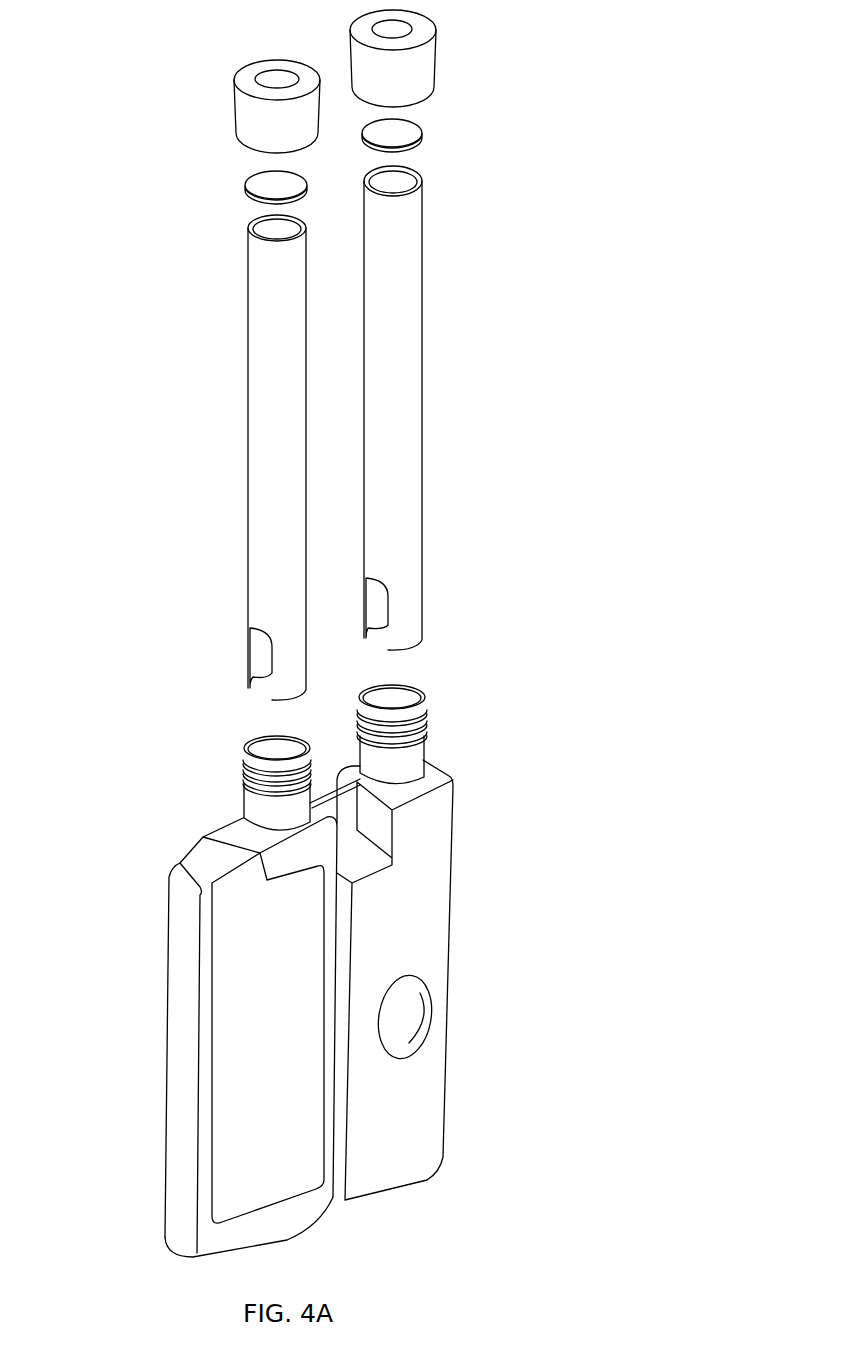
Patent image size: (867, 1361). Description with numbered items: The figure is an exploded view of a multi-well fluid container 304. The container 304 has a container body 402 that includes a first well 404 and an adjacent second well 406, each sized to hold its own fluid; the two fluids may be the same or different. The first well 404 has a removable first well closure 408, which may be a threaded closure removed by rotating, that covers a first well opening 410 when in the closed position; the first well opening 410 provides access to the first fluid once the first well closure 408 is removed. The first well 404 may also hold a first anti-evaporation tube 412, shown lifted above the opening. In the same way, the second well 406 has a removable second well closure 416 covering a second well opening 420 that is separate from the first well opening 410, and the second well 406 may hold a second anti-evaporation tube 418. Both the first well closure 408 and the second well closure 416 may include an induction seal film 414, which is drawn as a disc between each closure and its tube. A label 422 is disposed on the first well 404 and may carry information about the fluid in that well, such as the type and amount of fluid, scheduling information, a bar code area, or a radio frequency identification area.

The multi-well fluid container 304 is at (443, 765).
The container body 402 is at (167, 1068).
The first well 404 is at (287, 1240).
The second well 406 is at (432, 1180).
The removable first well closure 408 is at (232, 110).
The first well opening 410 is at (258, 746).
The first anti-evaporation tube 412 is at (248, 452).
The induction seal film 414 is at (260, 185).
The removable second well closure 416 is at (438, 60).
The second anti-evaporation tube 418 is at (425, 403).
The second well opening 420 is at (413, 690).
The label 422 is at (255, 994).